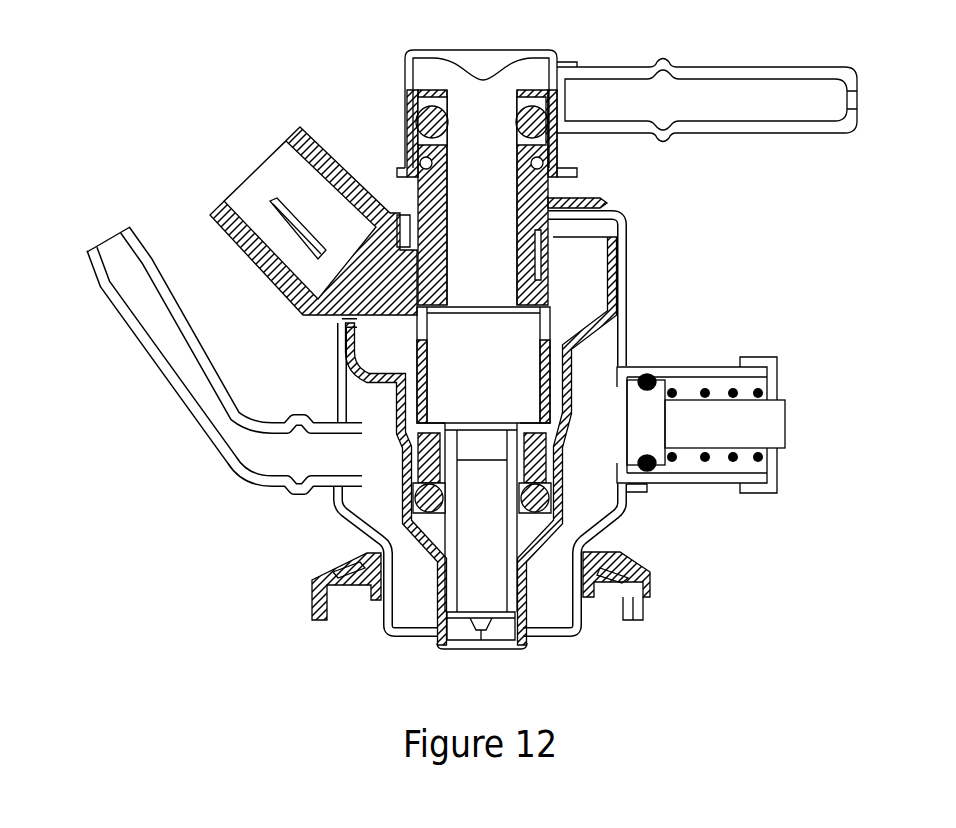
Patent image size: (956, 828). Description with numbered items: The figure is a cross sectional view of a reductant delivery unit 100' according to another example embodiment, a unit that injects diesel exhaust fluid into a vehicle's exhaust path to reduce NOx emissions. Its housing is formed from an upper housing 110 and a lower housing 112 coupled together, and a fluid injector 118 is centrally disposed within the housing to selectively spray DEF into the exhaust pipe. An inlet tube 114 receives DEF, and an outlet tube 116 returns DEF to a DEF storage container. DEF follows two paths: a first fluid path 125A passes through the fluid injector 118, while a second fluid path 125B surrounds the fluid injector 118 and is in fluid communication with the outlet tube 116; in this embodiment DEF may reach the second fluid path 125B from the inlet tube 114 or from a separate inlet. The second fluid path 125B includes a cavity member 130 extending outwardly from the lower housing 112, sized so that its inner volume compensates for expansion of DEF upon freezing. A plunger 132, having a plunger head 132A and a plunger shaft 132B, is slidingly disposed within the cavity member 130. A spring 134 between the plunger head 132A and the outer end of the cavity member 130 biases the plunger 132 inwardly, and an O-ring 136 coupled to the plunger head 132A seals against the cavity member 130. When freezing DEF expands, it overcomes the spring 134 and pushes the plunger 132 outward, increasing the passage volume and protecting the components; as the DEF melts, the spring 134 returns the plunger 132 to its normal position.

The reductant delivery unit 100' is at (448, 349).
The upper housing 110 is at (648, 256).
The lower housing 112 is at (381, 639).
The inlet tube 114 is at (650, 62).
The outlet tube 116 is at (188, 367).
The fluid injector 118 is at (438, 285).
The first fluid path 125A is at (484, 205).
The second fluid path 125B is at (374, 503).
The cavity member 130 is at (715, 485).
The plunger 132 is at (687, 395).
The plunger head 132A is at (633, 440).
The plunger shaft 132B is at (758, 421).
The spring 134 is at (733, 387).
The O-ring 136 is at (652, 362).